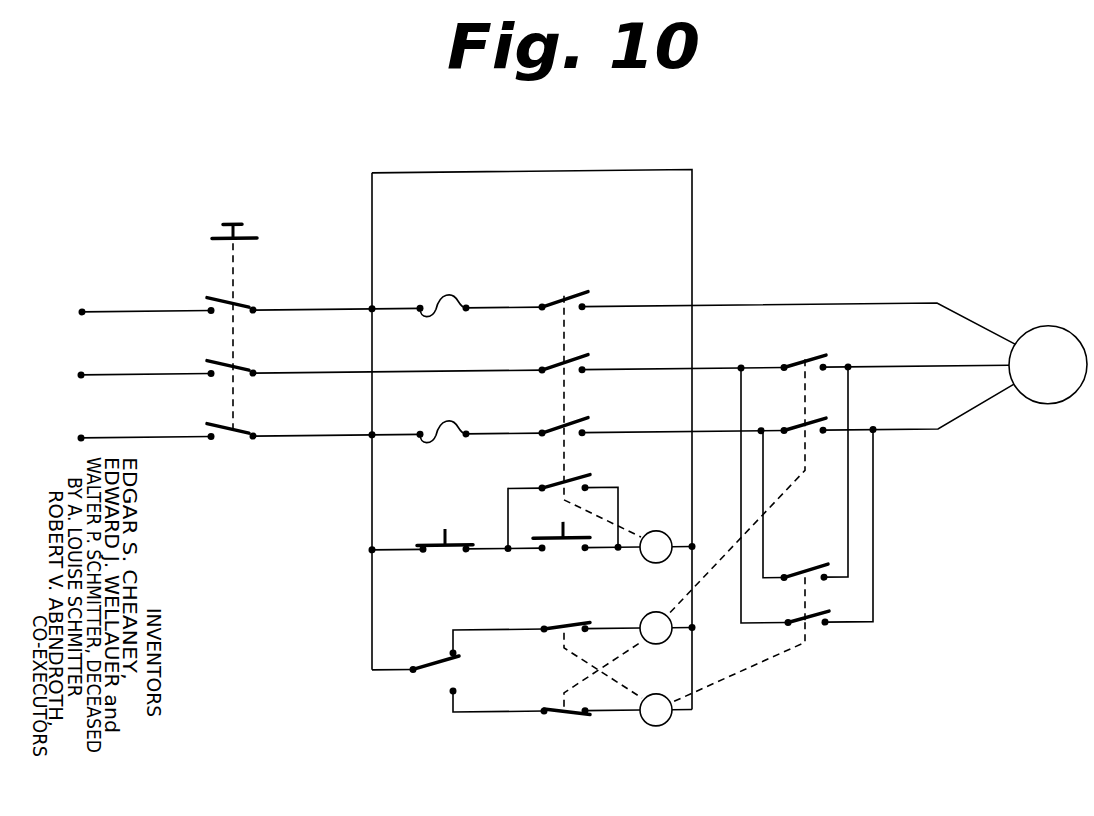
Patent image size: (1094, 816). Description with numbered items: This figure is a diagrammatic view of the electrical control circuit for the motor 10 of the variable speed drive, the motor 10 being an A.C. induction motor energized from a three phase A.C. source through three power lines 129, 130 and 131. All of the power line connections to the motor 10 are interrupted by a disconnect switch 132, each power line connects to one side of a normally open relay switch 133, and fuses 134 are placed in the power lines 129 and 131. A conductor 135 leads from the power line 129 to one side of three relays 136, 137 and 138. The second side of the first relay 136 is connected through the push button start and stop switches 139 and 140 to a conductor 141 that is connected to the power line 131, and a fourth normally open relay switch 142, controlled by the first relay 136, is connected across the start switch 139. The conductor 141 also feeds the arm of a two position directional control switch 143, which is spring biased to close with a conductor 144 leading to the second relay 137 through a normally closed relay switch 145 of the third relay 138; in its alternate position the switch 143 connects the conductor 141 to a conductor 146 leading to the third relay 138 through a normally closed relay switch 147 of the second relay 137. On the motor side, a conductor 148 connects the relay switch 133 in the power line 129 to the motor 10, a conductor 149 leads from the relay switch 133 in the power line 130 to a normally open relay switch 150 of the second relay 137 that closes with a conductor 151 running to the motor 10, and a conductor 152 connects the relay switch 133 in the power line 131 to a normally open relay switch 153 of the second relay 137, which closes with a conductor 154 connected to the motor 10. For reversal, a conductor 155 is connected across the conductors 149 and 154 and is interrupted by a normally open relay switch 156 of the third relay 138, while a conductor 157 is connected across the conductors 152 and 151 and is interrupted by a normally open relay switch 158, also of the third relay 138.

The motor 10 is at (1040, 331).
The power line 129 is at (163, 298).
The power line 130 is at (155, 368).
The power line 131 is at (155, 431).
The disconnect switch 132 is at (267, 224).
The normally open relay switches 133 is at (570, 294).
The fuses 134 is at (450, 299).
The conductor 135 is at (693, 213).
The first relay 136 is at (660, 535).
The second relay 137 is at (660, 612).
The third relay 138 is at (658, 694).
The push button start switch 139 is at (551, 535).
The push button stop switch 140 is at (460, 539).
The conductor 141 is at (372, 494).
The fourth normally open relay switch 142 is at (580, 475).
The two position directional control switch 143 is at (437, 657).
The conductor 144 is at (507, 627).
The normally closed relay switch 145 is at (580, 620).
The conductor 146 is at (512, 713).
The normally closed relay switch 147 is at (577, 718).
The conductor 148 is at (807, 302).
The conductor 149 is at (719, 369).
The normally open relay switch 150 is at (817, 355).
The conductor 151 is at (946, 371).
The conductor 152 is at (657, 433).
The normally open relay switch 153 is at (813, 424).
The conductor 154 is at (920, 429).
The conductor 155 is at (743, 605).
The normally open relay switch 156 is at (814, 621).
The conductor 157 is at (763, 534).
The normally open relay switch 158 is at (813, 568).